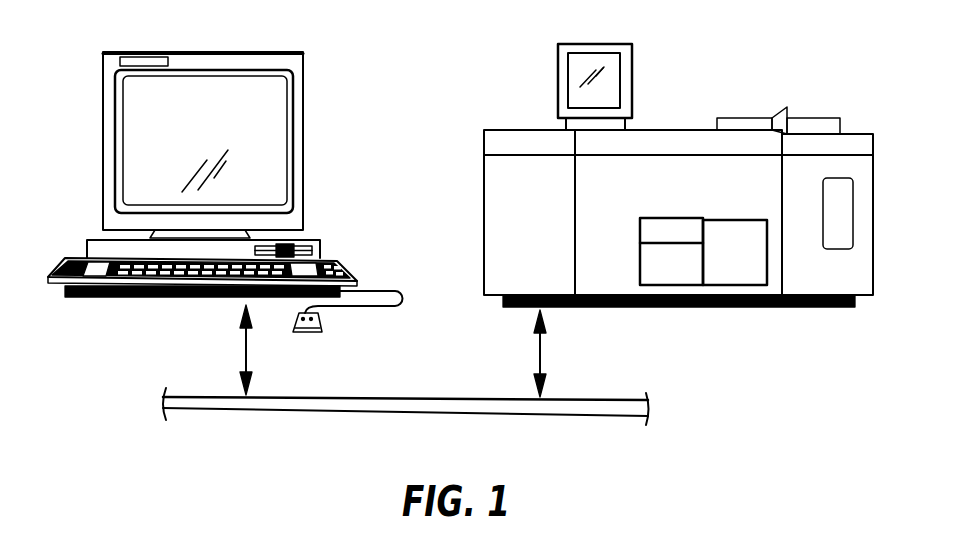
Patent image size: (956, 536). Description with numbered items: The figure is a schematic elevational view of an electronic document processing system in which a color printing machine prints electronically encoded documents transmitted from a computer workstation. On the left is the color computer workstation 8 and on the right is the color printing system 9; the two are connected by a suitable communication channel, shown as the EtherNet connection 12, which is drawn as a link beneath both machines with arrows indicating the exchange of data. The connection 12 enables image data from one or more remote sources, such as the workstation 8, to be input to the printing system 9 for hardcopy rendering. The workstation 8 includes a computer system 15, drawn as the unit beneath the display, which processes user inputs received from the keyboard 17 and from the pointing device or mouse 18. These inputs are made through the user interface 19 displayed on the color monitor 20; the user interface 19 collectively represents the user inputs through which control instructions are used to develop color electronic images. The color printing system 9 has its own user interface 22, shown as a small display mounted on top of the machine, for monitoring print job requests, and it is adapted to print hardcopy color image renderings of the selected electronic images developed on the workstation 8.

The color computer workstation 8 is at (332, 170).
The color printing system 9 is at (768, 82).
The EtherNet connection 12 is at (444, 396).
The computer system 15 is at (323, 250).
The keyboard 17 is at (56, 264).
The pointing device or mouse 18 is at (308, 333).
The user interface 19 is at (267, 123).
The color monitor 20 is at (204, 50).
The user interface 22 is at (612, 78).